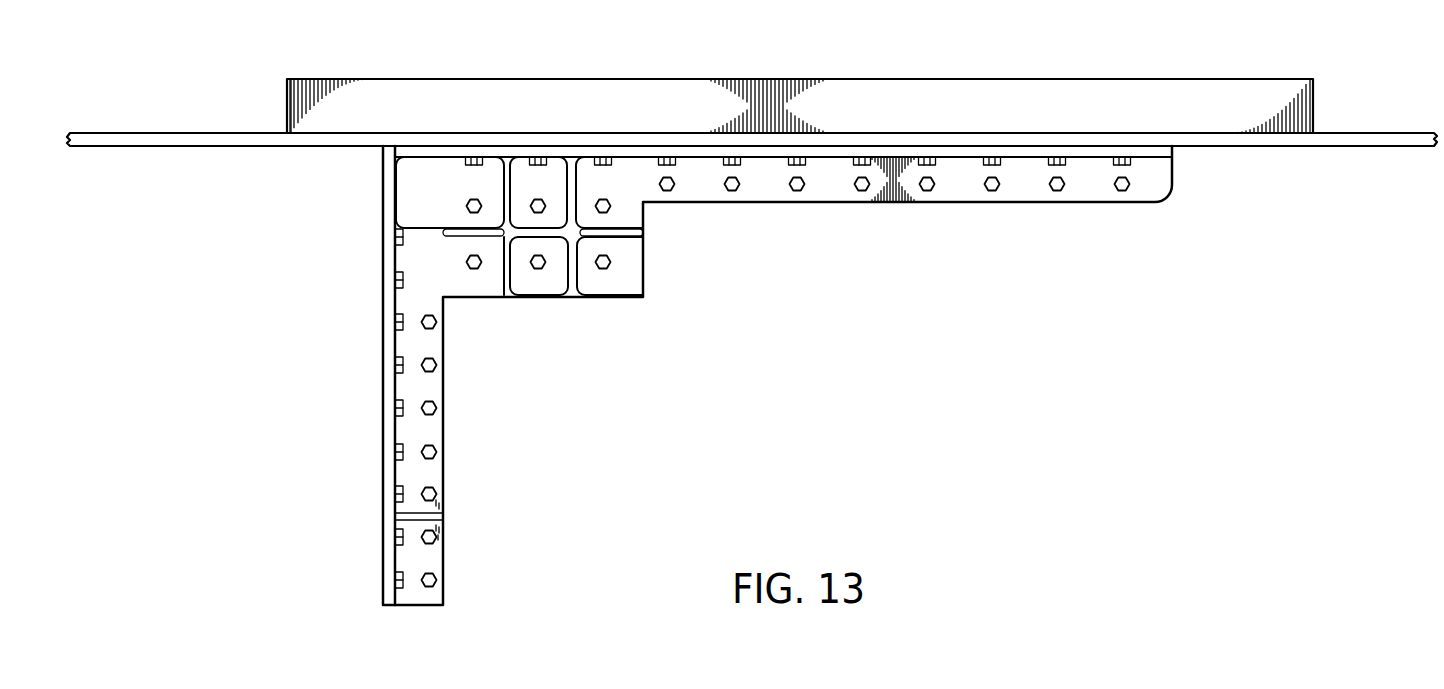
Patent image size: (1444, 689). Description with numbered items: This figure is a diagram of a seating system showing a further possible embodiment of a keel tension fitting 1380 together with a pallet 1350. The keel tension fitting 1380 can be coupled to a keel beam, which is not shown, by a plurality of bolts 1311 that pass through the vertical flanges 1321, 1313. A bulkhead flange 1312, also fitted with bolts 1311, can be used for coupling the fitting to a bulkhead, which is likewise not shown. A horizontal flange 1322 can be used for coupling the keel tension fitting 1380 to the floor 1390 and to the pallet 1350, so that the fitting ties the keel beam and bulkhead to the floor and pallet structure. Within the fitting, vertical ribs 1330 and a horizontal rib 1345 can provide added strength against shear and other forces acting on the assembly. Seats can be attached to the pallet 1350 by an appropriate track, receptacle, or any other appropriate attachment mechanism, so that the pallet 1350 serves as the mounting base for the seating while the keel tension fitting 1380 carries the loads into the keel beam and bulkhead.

The bolts 1311 is at (667, 192).
The bulkhead flange 1312 is at (383, 562).
The vertical flange 1313 is at (437, 558).
The vertical flange 1321 is at (1143, 190).
The horizontal flange 1322 is at (1150, 157).
The vertical ribs 1330 is at (503, 283).
The horizontal rib 1345 is at (547, 233).
The pallet 1350 is at (1080, 76).
The keel tension fitting 1380 is at (961, 208).
The floor 1390 is at (1363, 132).